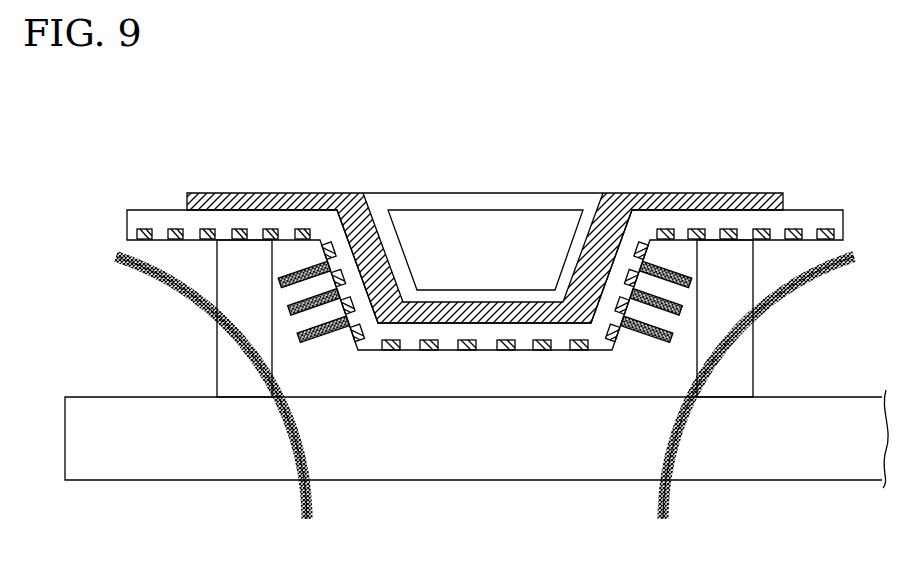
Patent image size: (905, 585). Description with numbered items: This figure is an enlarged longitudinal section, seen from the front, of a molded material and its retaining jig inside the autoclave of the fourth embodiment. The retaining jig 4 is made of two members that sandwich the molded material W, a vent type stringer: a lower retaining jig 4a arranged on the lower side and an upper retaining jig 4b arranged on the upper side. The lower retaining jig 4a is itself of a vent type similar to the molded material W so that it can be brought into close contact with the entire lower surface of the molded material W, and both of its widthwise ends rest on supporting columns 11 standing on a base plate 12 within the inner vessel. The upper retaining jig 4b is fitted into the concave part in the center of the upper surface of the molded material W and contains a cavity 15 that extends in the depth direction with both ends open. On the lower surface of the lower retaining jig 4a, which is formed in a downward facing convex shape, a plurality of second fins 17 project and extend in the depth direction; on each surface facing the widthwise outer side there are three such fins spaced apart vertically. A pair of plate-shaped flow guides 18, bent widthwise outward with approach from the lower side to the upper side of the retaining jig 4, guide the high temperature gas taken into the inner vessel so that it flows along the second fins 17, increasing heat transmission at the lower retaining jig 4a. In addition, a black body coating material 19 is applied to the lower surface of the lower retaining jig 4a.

The retaining jig 4 is at (66, 104).
The lower retaining jig 4a is at (130, 223).
The upper retaining jig 4b is at (400, 200).
The cavity 15 is at (498, 233).
The molded material W is at (680, 197).
The supporting columns 11 is at (230, 384).
The base plate 12 is at (750, 457).
The second fins 17 is at (333, 335).
The flow guides 18 is at (298, 497).
The black body coating material 19 is at (790, 240).